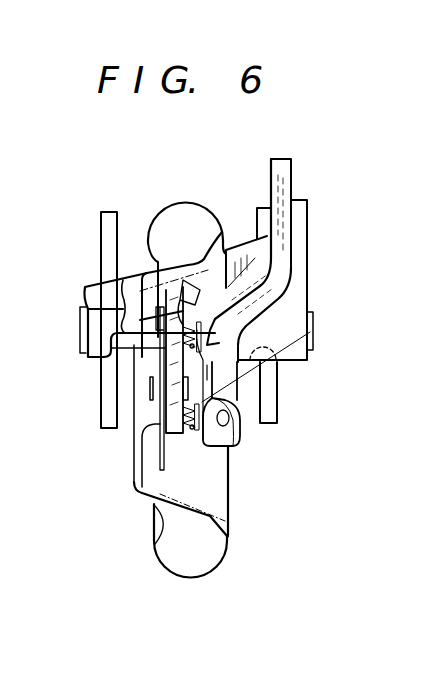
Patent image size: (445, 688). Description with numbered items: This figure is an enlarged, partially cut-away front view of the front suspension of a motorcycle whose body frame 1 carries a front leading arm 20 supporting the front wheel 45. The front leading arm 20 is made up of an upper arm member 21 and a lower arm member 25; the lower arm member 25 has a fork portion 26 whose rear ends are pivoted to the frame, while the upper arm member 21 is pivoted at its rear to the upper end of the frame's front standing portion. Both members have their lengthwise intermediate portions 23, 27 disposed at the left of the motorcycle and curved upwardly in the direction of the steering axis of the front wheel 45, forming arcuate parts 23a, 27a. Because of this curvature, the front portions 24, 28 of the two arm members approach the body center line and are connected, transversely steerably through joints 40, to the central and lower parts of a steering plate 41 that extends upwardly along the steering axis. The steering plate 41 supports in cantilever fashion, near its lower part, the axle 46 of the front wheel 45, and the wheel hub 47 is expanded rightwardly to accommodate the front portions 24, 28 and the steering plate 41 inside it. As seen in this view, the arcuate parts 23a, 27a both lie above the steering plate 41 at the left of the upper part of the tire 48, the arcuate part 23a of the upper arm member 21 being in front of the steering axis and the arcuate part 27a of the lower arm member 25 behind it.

The body frame 1 is at (98, 227).
The front leading arm 20 is at (334, 232).
The upper arm member 21 is at (296, 170).
The intermediate portion of upper arm member 23 is at (282, 220).
The arcuate part of upper arm member 23a is at (283, 190).
The front portion of upper arm member 24 is at (300, 357).
The lower arm member 25 is at (313, 280).
The fork portion 26 is at (90, 284).
The intermediate portion of lower arm member 27 is at (297, 285).
The arcuate part of lower arm member 27a is at (297, 238).
The front portion of lower arm member 28 is at (240, 418).
The joint 40 is at (185, 320).
The steering plate 41 is at (167, 347).
The front wheel 45 is at (138, 499).
The axle 46 is at (150, 390).
The wheel hub 47 is at (140, 457).
The tire 48 is at (173, 572).